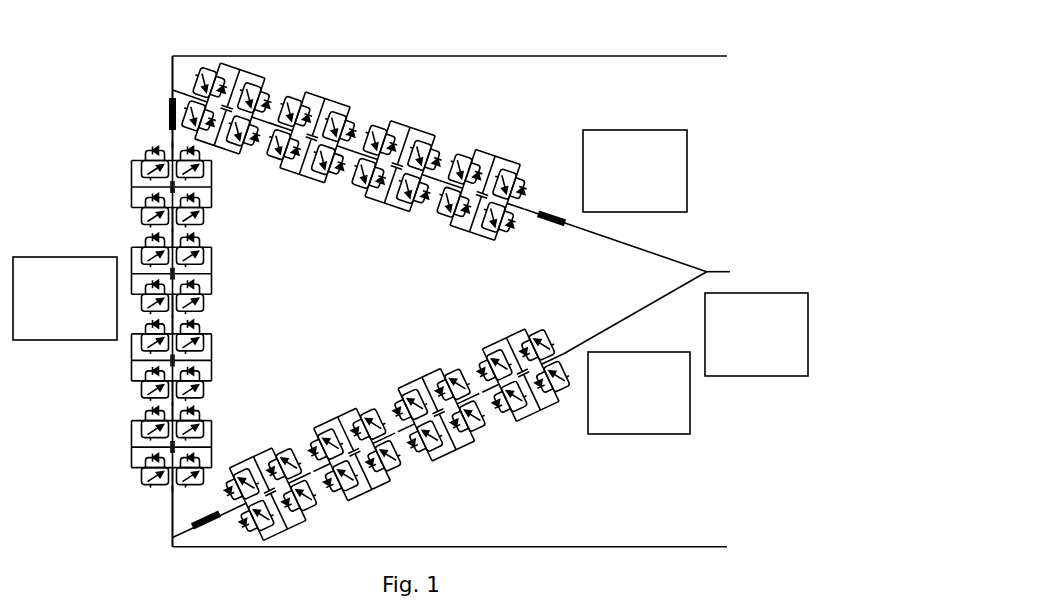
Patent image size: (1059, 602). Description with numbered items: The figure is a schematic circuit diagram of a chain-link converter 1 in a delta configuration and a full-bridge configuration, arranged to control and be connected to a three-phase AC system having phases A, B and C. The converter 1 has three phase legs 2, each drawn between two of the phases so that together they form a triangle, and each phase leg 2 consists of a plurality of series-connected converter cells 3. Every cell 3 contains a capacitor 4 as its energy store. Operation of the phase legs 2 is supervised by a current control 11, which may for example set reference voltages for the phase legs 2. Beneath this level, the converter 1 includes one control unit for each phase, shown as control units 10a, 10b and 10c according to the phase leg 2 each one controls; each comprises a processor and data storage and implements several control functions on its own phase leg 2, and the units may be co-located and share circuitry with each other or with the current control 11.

The chain-link converter 1 is at (768, 56).
The phase leg 2 is at (419, 301).
The converter cell 3 is at (357, 301).
The capacitor 4 is at (220, 152).
The control unit 10a is at (616, 156).
The control unit 10b is at (620, 378).
The control unit 10c is at (46, 286).
The current control 11 is at (744, 318).